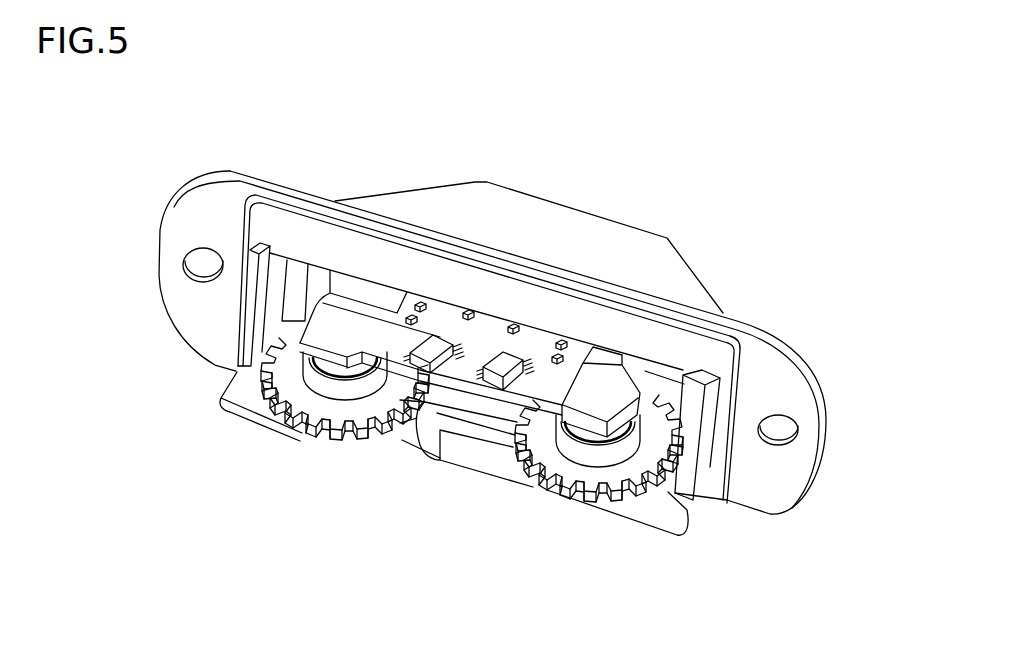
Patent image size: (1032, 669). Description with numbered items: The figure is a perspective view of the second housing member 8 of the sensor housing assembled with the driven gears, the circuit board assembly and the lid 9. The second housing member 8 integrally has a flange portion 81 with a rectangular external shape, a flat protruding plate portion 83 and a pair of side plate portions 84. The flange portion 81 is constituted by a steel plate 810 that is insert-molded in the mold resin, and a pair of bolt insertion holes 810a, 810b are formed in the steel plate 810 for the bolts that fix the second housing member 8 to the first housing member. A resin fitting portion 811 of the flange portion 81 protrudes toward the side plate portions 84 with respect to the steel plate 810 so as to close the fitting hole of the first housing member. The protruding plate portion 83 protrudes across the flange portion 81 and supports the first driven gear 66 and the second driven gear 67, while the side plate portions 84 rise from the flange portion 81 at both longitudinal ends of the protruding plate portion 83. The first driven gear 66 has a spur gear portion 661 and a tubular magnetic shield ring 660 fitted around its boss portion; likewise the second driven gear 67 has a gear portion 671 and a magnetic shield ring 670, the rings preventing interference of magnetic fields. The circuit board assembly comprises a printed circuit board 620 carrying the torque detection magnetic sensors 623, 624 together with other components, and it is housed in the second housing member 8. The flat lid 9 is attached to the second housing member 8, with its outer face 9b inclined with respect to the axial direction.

The second housing member 8 is at (850, 526).
The flange portion 81 is at (158, 177).
The steel plate 810 is at (820, 370).
The bolt insertion holes 810a is at (183, 263).
The mounting hole 810b is at (793, 423).
The fitting portion 811 is at (717, 347).
The lid 9 is at (552, 203).
The outer face 9b is at (428, 201).
The side plate portions 84 is at (247, 350).
The protruding plate portion 83 is at (220, 403).
The printed circuit board 620 is at (613, 403).
The torque detection magnetic sensor 623 is at (507, 367).
The torque detection magnetic sensor 624 is at (440, 347).
The second driven gear 67 is at (344, 458).
The magnetic shield ring 670 is at (317, 383).
The gear portion 671 is at (297, 440).
The first driven gear 66 is at (517, 513).
The magnetic shield ring 660 is at (607, 457).
The gear portion 661 is at (557, 500).